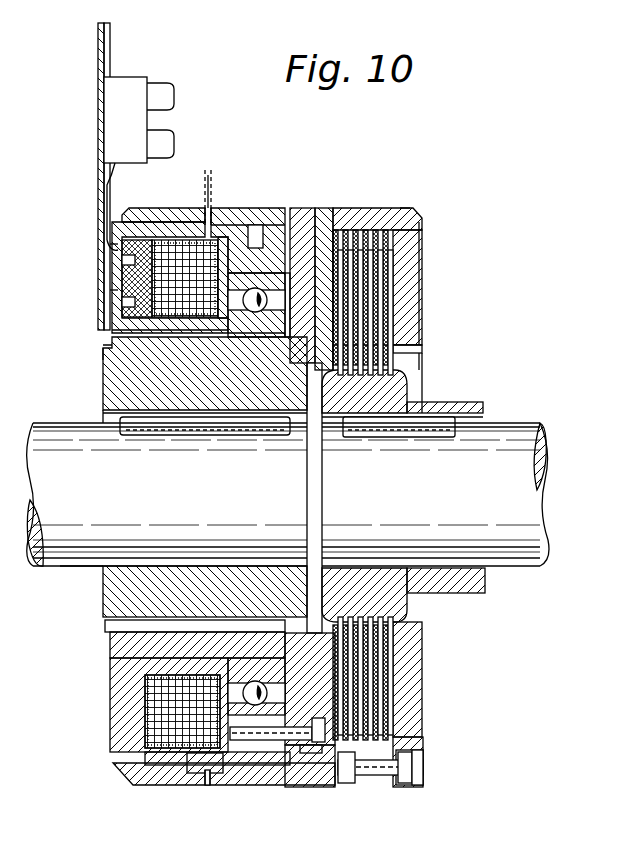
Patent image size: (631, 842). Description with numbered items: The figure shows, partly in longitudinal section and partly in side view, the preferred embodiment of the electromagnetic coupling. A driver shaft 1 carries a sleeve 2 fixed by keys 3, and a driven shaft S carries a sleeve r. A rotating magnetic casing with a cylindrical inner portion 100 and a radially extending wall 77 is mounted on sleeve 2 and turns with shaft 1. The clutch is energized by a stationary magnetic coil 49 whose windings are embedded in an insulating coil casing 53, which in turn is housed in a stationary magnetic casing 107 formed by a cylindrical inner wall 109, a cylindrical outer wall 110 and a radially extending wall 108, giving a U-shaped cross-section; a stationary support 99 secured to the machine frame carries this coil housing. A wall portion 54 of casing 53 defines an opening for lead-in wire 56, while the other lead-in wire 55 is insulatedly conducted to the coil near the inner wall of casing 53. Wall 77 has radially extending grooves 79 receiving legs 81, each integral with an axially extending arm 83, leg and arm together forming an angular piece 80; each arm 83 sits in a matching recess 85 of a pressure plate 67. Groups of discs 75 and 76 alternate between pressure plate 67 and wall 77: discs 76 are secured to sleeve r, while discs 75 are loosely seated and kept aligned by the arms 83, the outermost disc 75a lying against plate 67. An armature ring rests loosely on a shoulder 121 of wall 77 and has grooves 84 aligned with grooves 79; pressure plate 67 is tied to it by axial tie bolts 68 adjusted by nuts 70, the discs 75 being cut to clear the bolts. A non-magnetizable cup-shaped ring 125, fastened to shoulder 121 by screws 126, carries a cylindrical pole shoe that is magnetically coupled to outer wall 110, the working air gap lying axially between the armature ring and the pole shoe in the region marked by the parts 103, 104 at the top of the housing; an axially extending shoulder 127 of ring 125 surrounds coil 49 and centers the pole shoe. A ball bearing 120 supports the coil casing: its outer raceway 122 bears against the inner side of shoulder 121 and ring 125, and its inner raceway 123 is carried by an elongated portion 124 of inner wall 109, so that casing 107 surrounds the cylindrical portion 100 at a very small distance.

The driver shaft 1 is at (90, 560).
The sleeve 2 is at (103, 399).
The keys 3 is at (103, 616).
The magnetic coil 49 is at (178, 300).
The coil casing 53 is at (112, 320).
The wall portion 54 is at (110, 245).
The lead-in wire 55 is at (115, 290).
The lead-in wire 56 is at (118, 263).
The pressure plate 67 is at (413, 258).
The tie bolts 68 is at (380, 767).
The nuts 70 is at (424, 755).
The discs 75 is at (385, 676).
The outermost disc 75a is at (400, 300).
The discs 76 is at (400, 353).
The radially extending wall 77 is at (305, 250).
The radially extending grooves 79 is at (372, 390).
The angular piece 80 is at (403, 200).
The legs 81 is at (330, 240).
The axially extending arm 83 is at (368, 224).
The grooves 84 is at (333, 265).
The recess 85 is at (420, 216).
The stationary support 99 is at (98, 96).
The cylindrical inner portion 100 is at (112, 352).
The housing surface 103 is at (218, 225).
The gap line 104 is at (208, 175).
The magnetic casing 107 is at (110, 660).
The radially extending wall 108 is at (115, 300).
The cylindrical inner wall 109 is at (112, 330).
The cylindrical outer wall 110 is at (140, 775).
The ball bearing 120 is at (261, 657).
The shoulder 121 is at (262, 228).
The outer raceway 122 is at (287, 275).
The inner raceway 123 is at (236, 334).
The elongated portion 124 is at (266, 338).
The cup-shaped ring 125 is at (265, 742).
The screws 126 is at (302, 745).
The axially extending shoulder 127 is at (197, 766).
The sleeve r is at (452, 407).
The driven shaft S is at (500, 442).